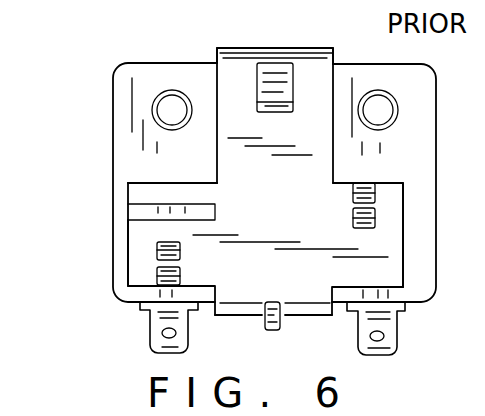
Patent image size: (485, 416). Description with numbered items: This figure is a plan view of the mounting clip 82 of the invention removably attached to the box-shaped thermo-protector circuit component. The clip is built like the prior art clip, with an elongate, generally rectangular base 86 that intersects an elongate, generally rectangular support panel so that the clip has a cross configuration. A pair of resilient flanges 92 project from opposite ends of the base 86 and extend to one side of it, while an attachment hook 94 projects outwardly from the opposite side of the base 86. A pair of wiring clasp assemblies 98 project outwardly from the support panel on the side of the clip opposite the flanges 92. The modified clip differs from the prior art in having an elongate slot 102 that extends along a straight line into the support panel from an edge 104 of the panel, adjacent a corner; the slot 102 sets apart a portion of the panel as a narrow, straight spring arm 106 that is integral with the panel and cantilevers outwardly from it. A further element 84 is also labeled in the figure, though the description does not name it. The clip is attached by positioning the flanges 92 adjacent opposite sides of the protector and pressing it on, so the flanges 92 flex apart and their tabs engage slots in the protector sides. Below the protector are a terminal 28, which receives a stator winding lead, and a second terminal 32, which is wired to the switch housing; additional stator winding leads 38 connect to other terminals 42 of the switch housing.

The terminal 28 is at (157, 352).
The second terminal 32 is at (393, 348).
The mounting clip 82 is at (388, 228).
The fuse element portion 84 is at (387, 269).
The base 86 is at (317, 108).
The resilient flanges 92 is at (260, 47).
The attachment hook 94 is at (277, 82).
The wiring clasp assemblies 98 is at (379, 181).
The elongate slot 102 is at (127, 208).
The edge 104 is at (128, 235).
The spring arm 106 is at (148, 185).
The stator winding leads 38 is at (427, 410).
The terminals 42 is at (424, 408).